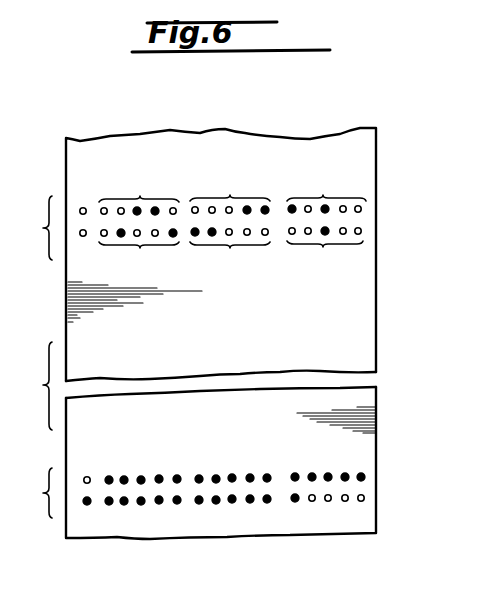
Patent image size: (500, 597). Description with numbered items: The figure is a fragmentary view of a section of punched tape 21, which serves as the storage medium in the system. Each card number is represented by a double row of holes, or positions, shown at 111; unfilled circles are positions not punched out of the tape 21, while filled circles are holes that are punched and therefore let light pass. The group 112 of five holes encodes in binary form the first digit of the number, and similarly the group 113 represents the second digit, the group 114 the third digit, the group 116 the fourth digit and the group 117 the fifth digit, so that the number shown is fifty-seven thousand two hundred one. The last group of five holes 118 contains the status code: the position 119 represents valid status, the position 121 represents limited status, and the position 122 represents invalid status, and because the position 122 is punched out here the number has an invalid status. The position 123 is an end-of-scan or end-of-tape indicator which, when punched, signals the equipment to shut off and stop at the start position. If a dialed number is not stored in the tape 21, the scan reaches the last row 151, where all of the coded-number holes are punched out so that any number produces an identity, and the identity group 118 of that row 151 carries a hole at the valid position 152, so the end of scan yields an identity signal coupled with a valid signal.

The tape 21 is at (368, 275).
The double row of holes 111 is at (42, 228).
The group of five holes 112 is at (139, 198).
The group of five holes 113 is at (230, 196).
The group of five holes 114 is at (326, 195).
The group of five holes 116 is at (139, 248).
The group of five holes 117 is at (230, 247).
The status code group 118 is at (325, 247).
The valid status position 119 is at (291, 235).
The limited status position 121 is at (307, 235).
The invalid status position 122 is at (328, 229).
The end-of-scan indicator 123 is at (83, 237).
The last row 151 is at (186, 493).
The valid position 152 is at (295, 503).